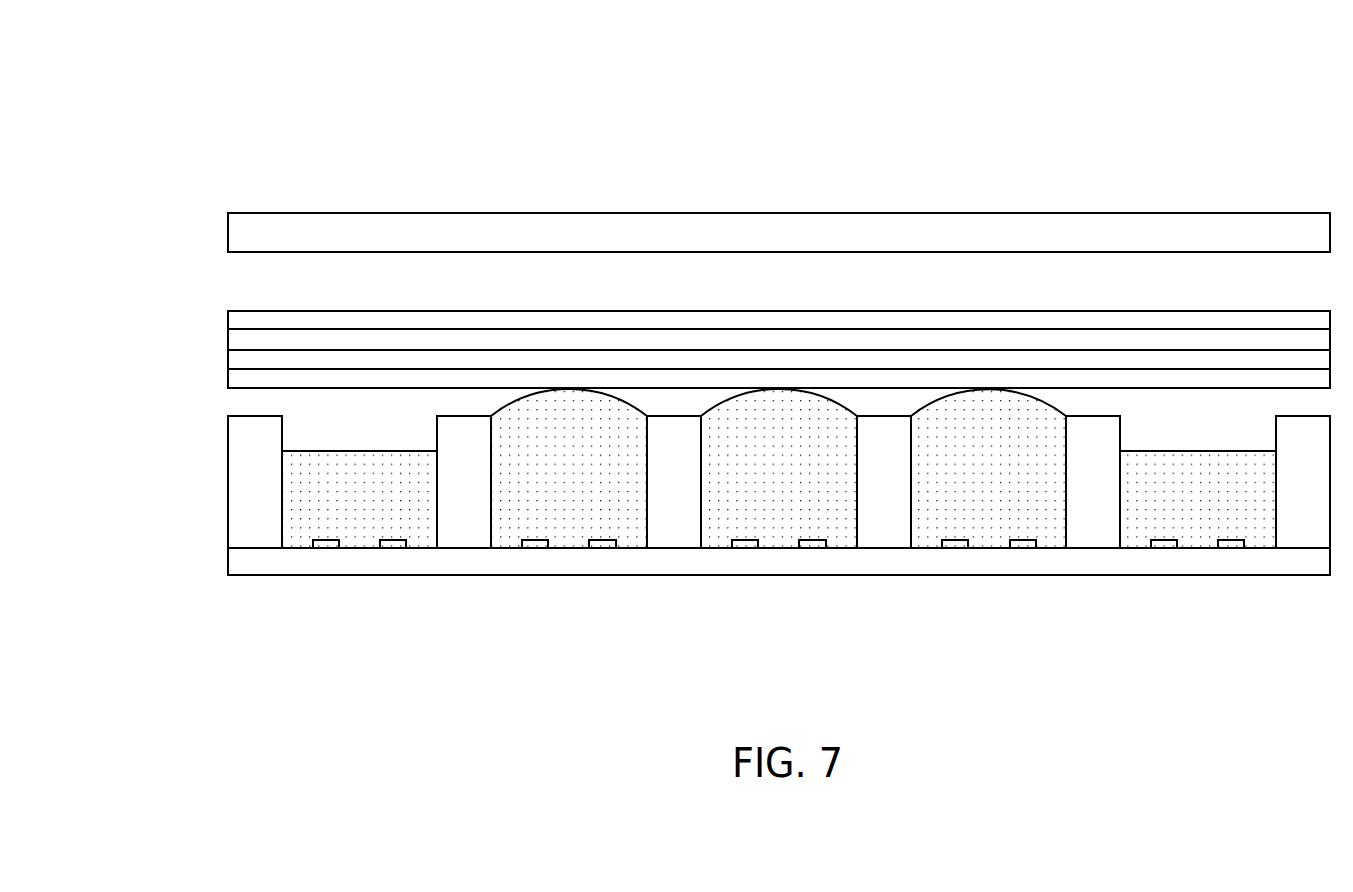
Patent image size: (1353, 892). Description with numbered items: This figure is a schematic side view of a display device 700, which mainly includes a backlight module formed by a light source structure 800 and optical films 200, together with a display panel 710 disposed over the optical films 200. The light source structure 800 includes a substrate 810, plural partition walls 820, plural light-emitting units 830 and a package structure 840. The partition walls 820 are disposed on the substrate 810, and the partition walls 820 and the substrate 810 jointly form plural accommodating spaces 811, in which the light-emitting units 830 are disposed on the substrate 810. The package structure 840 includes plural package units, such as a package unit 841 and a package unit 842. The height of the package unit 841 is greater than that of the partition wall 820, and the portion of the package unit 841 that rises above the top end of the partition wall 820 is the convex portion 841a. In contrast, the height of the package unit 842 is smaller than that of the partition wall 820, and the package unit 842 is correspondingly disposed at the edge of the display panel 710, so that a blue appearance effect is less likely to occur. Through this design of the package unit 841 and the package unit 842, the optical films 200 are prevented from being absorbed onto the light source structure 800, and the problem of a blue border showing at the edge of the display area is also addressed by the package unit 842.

The display device 700 is at (160, 121).
The display panel 710 is at (438, 227).
The optical films 200 is at (213, 312).
The light source structure 800 is at (701, 433).
The substrate 810 is at (364, 563).
The accommodating spaces 811 is at (335, 418).
The partition walls 820 is at (467, 530).
The light-emitting units 830 is at (603, 546).
The package structure 840 is at (883, 433).
The package unit 841 is at (990, 530).
The convex portion 841a is at (982, 418).
The package unit 842 is at (1198, 547).